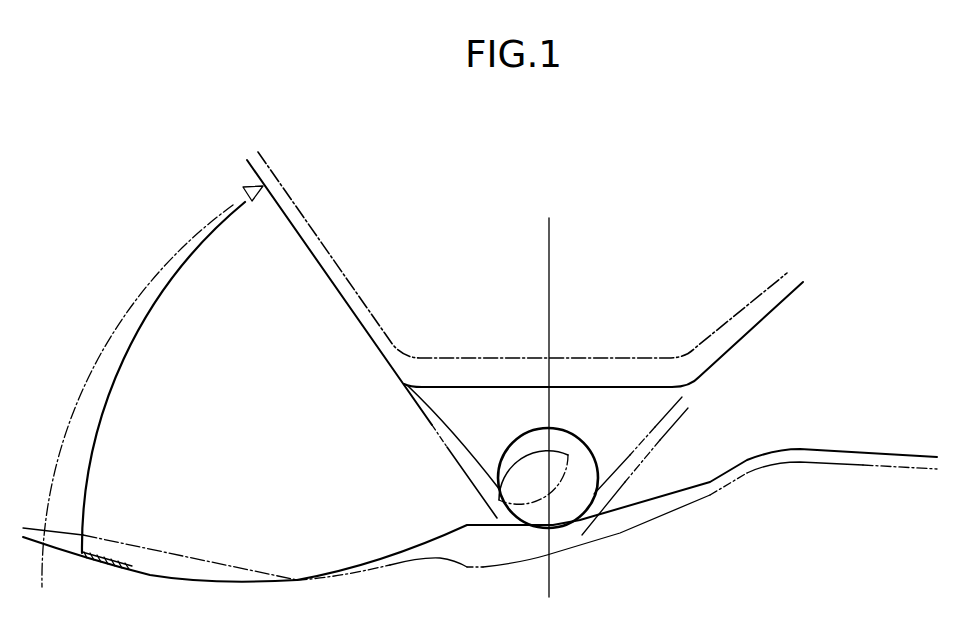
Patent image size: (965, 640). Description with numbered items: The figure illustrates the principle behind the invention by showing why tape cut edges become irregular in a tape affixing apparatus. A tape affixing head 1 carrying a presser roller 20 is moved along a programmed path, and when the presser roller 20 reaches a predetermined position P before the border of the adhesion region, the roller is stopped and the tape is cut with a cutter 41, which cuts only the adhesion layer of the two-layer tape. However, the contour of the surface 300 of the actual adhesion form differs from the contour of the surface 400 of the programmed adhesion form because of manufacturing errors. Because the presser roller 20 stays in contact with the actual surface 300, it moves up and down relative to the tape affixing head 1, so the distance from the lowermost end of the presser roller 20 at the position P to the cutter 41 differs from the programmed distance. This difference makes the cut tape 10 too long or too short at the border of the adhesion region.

The tape affixing head 1 is at (753, 310).
The cut tape 10 is at (130, 558).
The presser roller 20 is at (520, 433).
The cutter 41 is at (263, 205).
The surface of actual adhesion form 300 is at (880, 446).
The surface of programmed adhesion form 400 is at (855, 473).
The predetermined position P is at (543, 311).